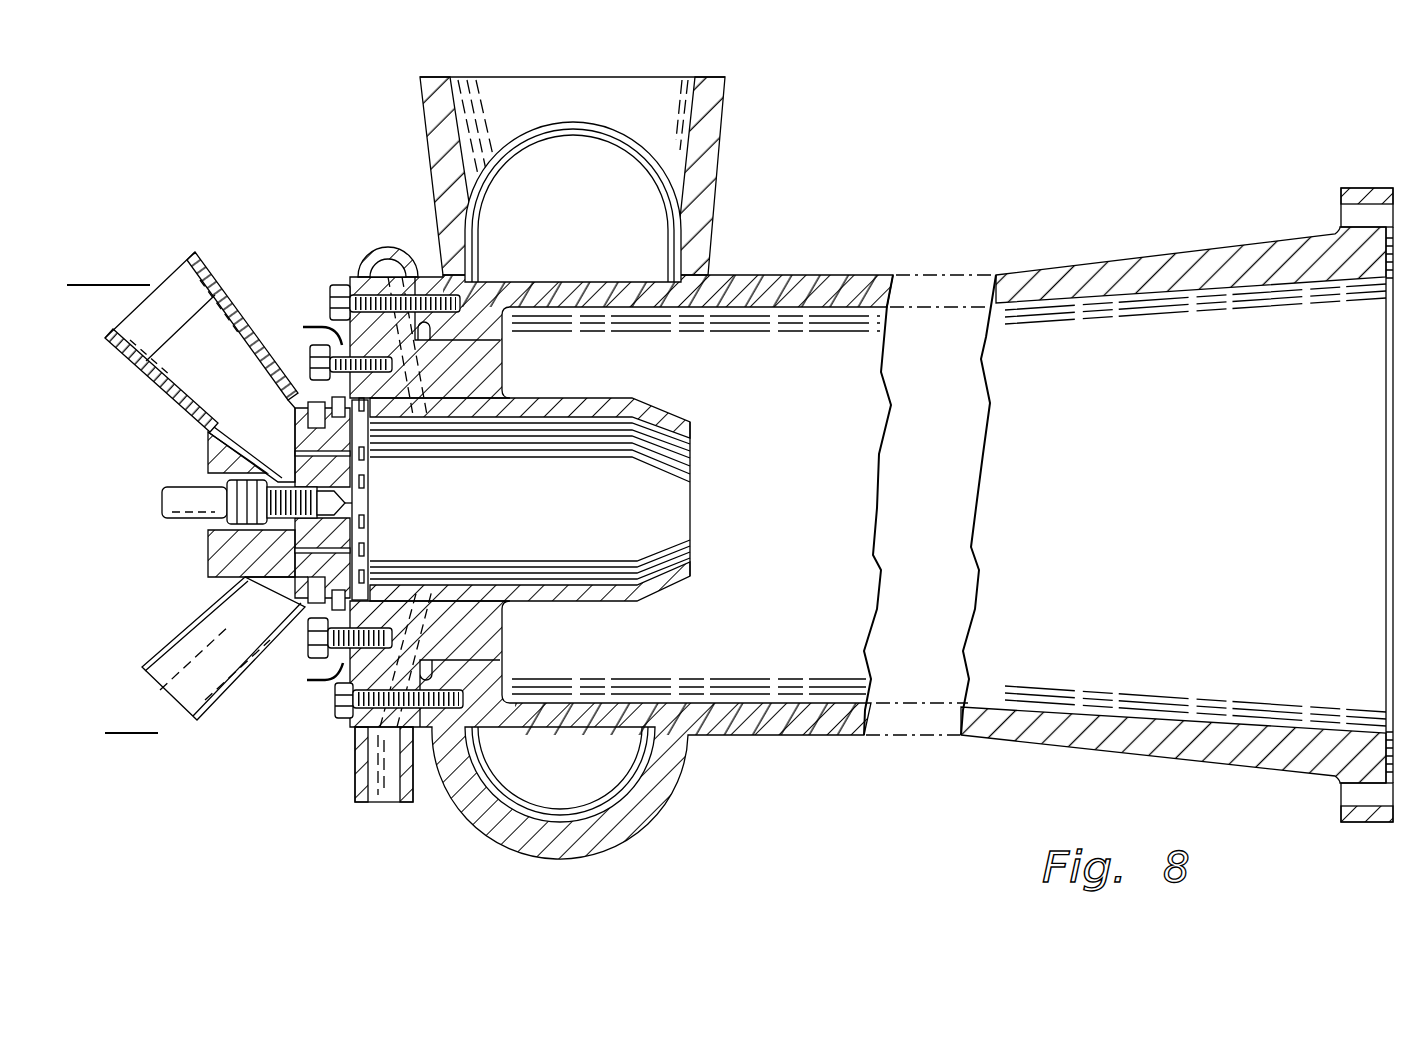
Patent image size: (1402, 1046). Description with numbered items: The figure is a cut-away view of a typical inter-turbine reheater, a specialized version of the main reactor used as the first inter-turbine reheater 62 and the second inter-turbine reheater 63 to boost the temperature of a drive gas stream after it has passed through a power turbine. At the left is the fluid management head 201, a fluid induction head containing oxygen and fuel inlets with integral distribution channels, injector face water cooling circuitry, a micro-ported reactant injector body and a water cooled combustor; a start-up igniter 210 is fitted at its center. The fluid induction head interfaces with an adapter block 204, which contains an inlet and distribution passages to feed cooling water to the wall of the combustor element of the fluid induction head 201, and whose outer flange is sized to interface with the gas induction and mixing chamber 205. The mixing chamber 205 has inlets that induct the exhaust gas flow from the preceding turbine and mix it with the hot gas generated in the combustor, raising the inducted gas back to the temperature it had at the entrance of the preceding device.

The first inter-turbine reheater 62 is at (730, 453).
The inter-turbine reheater 63 is at (730, 468).
The fluid management head 201 is at (212, 278).
The adapter block 204 is at (357, 790).
The gas induction and mixing chamber 205 is at (720, 160).
The igniter 210 is at (192, 518).